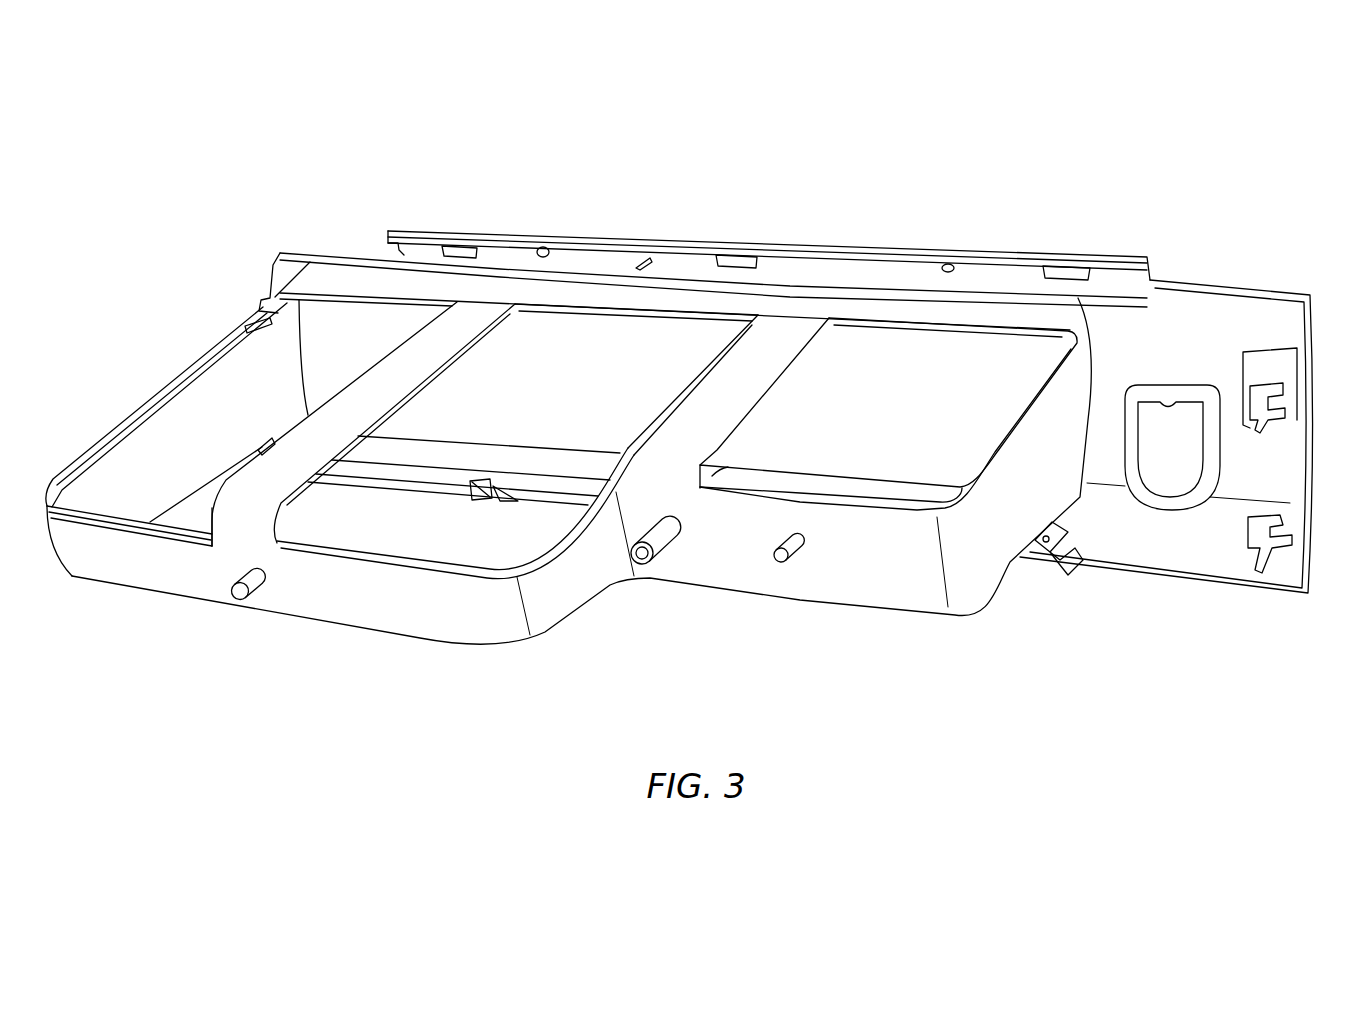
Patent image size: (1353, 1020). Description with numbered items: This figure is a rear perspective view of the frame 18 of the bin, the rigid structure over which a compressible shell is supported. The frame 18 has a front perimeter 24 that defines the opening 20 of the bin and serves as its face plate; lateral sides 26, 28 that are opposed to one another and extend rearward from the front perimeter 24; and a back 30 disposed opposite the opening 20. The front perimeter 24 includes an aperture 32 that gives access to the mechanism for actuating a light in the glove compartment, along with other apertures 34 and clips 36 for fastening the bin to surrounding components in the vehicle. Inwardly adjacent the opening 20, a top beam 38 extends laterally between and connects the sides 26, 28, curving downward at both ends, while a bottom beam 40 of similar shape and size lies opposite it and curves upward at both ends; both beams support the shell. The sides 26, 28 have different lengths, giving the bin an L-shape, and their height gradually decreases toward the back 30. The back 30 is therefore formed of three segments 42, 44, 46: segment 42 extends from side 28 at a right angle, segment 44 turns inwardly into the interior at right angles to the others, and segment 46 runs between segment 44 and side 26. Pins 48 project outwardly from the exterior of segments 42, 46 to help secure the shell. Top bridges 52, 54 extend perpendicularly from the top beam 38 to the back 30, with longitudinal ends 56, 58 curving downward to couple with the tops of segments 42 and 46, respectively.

The frame 18 is at (174, 148).
The opening 20 is at (583, 383).
The front perimeter 24 is at (812, 240).
The lateral side 26 is at (1003, 577).
The lateral side 28 is at (143, 405).
The back 30 is at (432, 642).
The aperture 32 is at (1177, 428).
The apertures 34 is at (550, 252).
The clips 36 is at (477, 497).
The top beam 38 is at (875, 307).
The bottom beam 40 is at (435, 450).
The segment 42 is at (185, 600).
The segment 44 is at (588, 617).
The segment 46 is at (873, 613).
The pins 48 is at (250, 593).
The top bridge 52 is at (387, 353).
The top bridge 54 is at (800, 363).
The longitudinal end 56 is at (210, 503).
The longitudinal end 58 is at (712, 473).